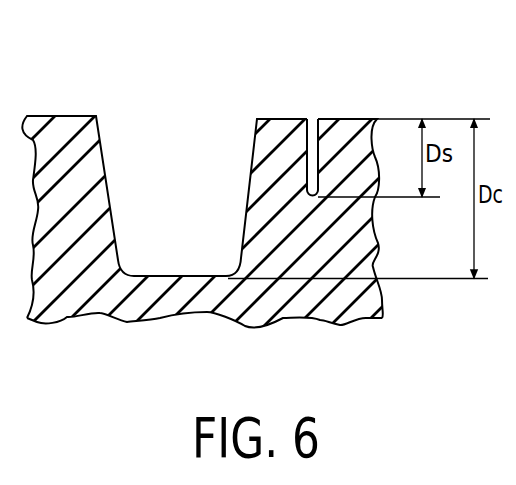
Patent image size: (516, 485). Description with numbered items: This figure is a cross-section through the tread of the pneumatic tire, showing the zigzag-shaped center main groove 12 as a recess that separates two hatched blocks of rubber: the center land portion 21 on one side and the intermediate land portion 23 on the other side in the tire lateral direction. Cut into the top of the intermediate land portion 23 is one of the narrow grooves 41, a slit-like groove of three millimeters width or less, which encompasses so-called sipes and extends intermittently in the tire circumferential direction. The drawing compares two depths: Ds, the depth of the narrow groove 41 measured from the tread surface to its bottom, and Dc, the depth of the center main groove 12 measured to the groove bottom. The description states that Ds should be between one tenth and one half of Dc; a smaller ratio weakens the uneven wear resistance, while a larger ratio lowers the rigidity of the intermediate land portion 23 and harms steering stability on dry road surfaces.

The center land portion 21 is at (62, 127).
The center main groove 12 is at (105, 170).
The intermediate land portion 23 is at (350, 130).
The narrow groove 41 is at (313, 121).